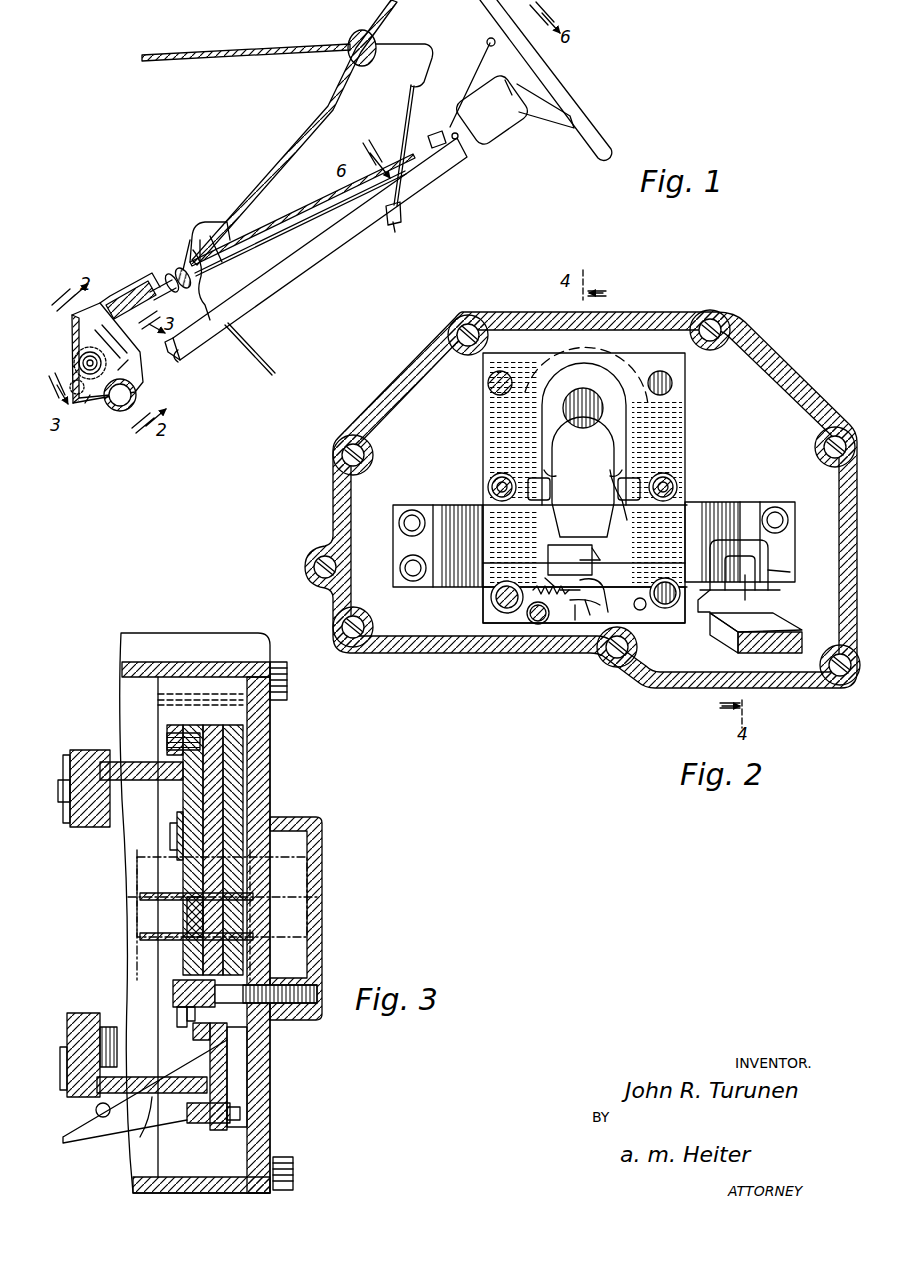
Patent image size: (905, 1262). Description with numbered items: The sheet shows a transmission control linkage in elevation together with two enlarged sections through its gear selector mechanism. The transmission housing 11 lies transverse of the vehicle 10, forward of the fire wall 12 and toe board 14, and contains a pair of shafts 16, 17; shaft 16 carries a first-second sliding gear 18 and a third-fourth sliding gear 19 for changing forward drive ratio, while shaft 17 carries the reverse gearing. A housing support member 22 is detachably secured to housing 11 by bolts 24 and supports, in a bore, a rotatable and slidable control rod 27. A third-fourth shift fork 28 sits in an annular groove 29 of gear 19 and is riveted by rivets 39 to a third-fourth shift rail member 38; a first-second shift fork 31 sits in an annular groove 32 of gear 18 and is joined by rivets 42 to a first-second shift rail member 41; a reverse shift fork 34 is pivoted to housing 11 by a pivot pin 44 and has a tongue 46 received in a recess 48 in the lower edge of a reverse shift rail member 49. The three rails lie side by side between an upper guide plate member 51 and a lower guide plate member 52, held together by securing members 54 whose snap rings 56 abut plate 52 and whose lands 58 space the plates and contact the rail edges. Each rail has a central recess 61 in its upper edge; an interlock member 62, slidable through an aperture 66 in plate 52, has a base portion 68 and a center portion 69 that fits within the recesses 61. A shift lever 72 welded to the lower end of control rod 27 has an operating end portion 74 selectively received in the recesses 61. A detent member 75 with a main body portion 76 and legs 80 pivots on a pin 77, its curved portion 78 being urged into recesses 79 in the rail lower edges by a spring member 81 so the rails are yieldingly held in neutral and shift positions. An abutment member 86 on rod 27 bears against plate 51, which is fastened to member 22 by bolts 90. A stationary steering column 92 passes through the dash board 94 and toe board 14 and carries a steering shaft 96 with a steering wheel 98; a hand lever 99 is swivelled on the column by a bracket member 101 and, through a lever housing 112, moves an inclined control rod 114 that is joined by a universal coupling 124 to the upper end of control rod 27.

In FIG. 1, the vehicle 10 is at (287, 48).
In FIG. 1, the housing 11 is at (137, 387).
In FIG. 2, the housing 11 is at (762, 372).
In FIG. 3, the housing 11 is at (195, 643).
In FIG. 1, the fire wall 12 is at (314, 125).
In FIG. 1, the toe board 14 is at (254, 358).
In FIG. 1, the shaft 16 is at (114, 410).
In FIG. 1, the shaft 17 is at (86, 405).
In FIG. 3, the first-second sliding gear 18 is at (88, 1011).
In FIG. 3, the third-fourth sliding gear 19 is at (101, 749).
In FIG. 1, the housing support member 22 is at (112, 312).
In FIG. 3, the housing support member 22 is at (297, 812).
In FIG. 2, the bolts 24 is at (468, 326).
In FIG. 3, the bolts 24 is at (285, 681).
In FIG. 1, the control rod 27 is at (162, 285).
In FIG. 2, the control rod 27 is at (543, 414).
In FIG. 2, the third-fourth shift fork 28 is at (437, 576).
In FIG. 3, the third-fourth shift fork 28 is at (138, 762).
In FIG. 3, the annular groove 29 is at (99, 803).
In FIG. 2, the first-second shift fork 31 is at (764, 510).
In FIG. 3, the first-second shift fork 31 is at (128, 1094).
In FIG. 3, the annular groove 32 is at (110, 1045).
In FIG. 2, the reverse shift fork 34 is at (716, 645).
In FIG. 3, the reverse shift fork 34 is at (63, 1144).
In FIG. 2, the third-fourth shift rail member 38 is at (461, 502).
In FIG. 3, the third-fourth shift rail member 38 is at (190, 735).
In FIG. 2, the rivets 39 is at (408, 568).
In FIG. 3, the rivets 39 is at (165, 740).
In FIG. 2, the first-second shift rail member 41 is at (740, 505).
In FIG. 3, the first-second shift rail member 41 is at (215, 1125).
In FIG. 2, the rivets 42 is at (782, 545).
In FIG. 3, the rivets 42 is at (152, 1100).
In FIG. 3, the pivot pin 44 is at (103, 1118).
In FIG. 2, the tongue 46 is at (765, 582).
In FIG. 3, the tongue 46 is at (246, 1085).
In FIG. 2, the recess 48 is at (711, 591).
In FIG. 2, the reverse shift rail member 49 is at (790, 573).
In FIG. 3, the reverse shift rail member 49 is at (232, 1122).
In FIG. 2, the upper guide plate member 51 is at (642, 352).
In FIG. 3, the upper guide plate member 51 is at (254, 838).
In FIG. 2, the lower guide plate member 52 is at (687, 471).
In FIG. 3, the lower guide plate member 52 is at (176, 808).
In FIG. 2, the securing members 54 is at (489, 488).
In FIG. 3, the securing members 54 is at (172, 990).
In FIG. 2, the snap rings 56 is at (492, 600).
In FIG. 3, the snap rings 56 is at (180, 1012).
In FIG. 2, the lands 58 is at (499, 476).
In FIG. 3, the lands 58 is at (213, 1036).
In FIG. 2, the central recess 61 is at (532, 540).
In FIG. 3, the central recess 61 is at (255, 913).
In FIG. 2, the interlock member 62 is at (540, 478).
In FIG. 3, the interlock member 62 is at (139, 897).
In FIG. 2, the aperture 66 is at (622, 490).
In FIG. 2, the base portion 68 is at (596, 520).
In FIG. 2, the center portion 69 is at (590, 545).
In FIG. 3, the center portion 69 is at (140, 913).
In FIG. 2, the shift lever 72 is at (541, 432).
In FIG. 2, the operating end portion 74 is at (595, 550).
In FIG. 3, the operating end portion 74 is at (187, 920).
In FIG. 2, the detent member 75 is at (565, 610).
In FIG. 2, the main body portion 76 is at (575, 622).
In FIG. 2, the pin 77 is at (540, 620).
In FIG. 2, the curved portion 78 is at (585, 617).
In FIG. 2, the recesses 79 is at (552, 578).
In FIG. 2, the legs 80 is at (563, 615).
In FIG. 2, the spring member 81 is at (520, 615).
In FIG. 2, the abutment member 86 is at (574, 356).
In FIG. 2, the bolts 90 is at (488, 386).
In FIG. 1, the steering column 92 is at (346, 232).
In FIG. 1, the dash board 94 is at (404, 214).
In FIG. 1, the steering shaft 96 is at (177, 356).
In FIG. 1, the steering wheel 98 is at (591, 120).
In FIG. 1, the hand lever 99 is at (448, 118).
In FIG. 1, the bracket member 101 is at (459, 142).
In FIG. 1, the lever housing 112 is at (437, 130).
In FIG. 1, the control rod 114 is at (307, 203).
In FIG. 1, the universal coupling 124 is at (186, 268).